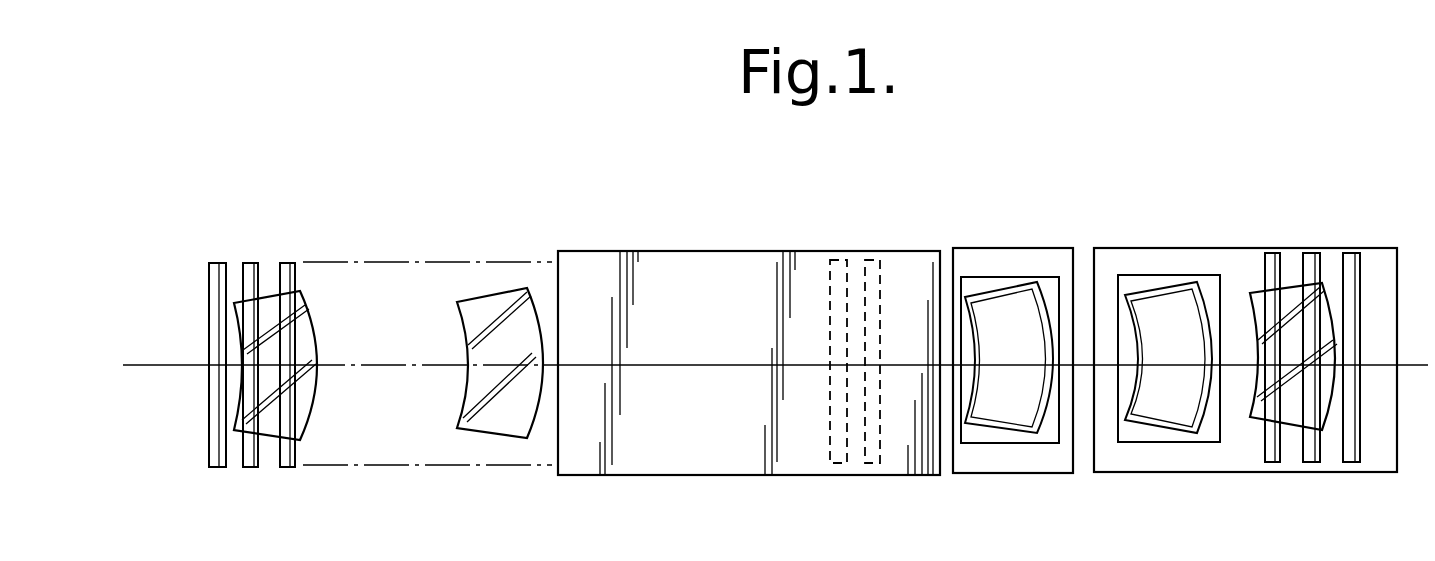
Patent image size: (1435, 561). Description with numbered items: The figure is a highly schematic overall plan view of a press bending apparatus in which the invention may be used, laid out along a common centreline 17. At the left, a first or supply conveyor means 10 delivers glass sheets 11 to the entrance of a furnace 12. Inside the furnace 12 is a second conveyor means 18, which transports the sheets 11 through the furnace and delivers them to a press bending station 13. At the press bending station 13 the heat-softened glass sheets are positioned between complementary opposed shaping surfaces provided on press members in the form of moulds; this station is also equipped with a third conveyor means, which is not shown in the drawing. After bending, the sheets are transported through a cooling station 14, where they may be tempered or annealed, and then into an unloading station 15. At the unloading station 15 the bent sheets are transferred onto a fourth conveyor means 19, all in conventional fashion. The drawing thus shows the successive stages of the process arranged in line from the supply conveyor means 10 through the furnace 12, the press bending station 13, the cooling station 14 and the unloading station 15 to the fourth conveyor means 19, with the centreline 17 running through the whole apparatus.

The first or supply conveyor means 10 is at (218, 297).
The glass sheets 11 is at (308, 310).
The furnace 12 is at (704, 246).
The press bending station 13 is at (1006, 242).
The cooling station 14 is at (1153, 237).
The unloading station 15 is at (1293, 230).
The centreline 17 is at (157, 365).
The second conveyor means 18 is at (827, 262).
The fourth conveyor means 19 is at (1355, 260).